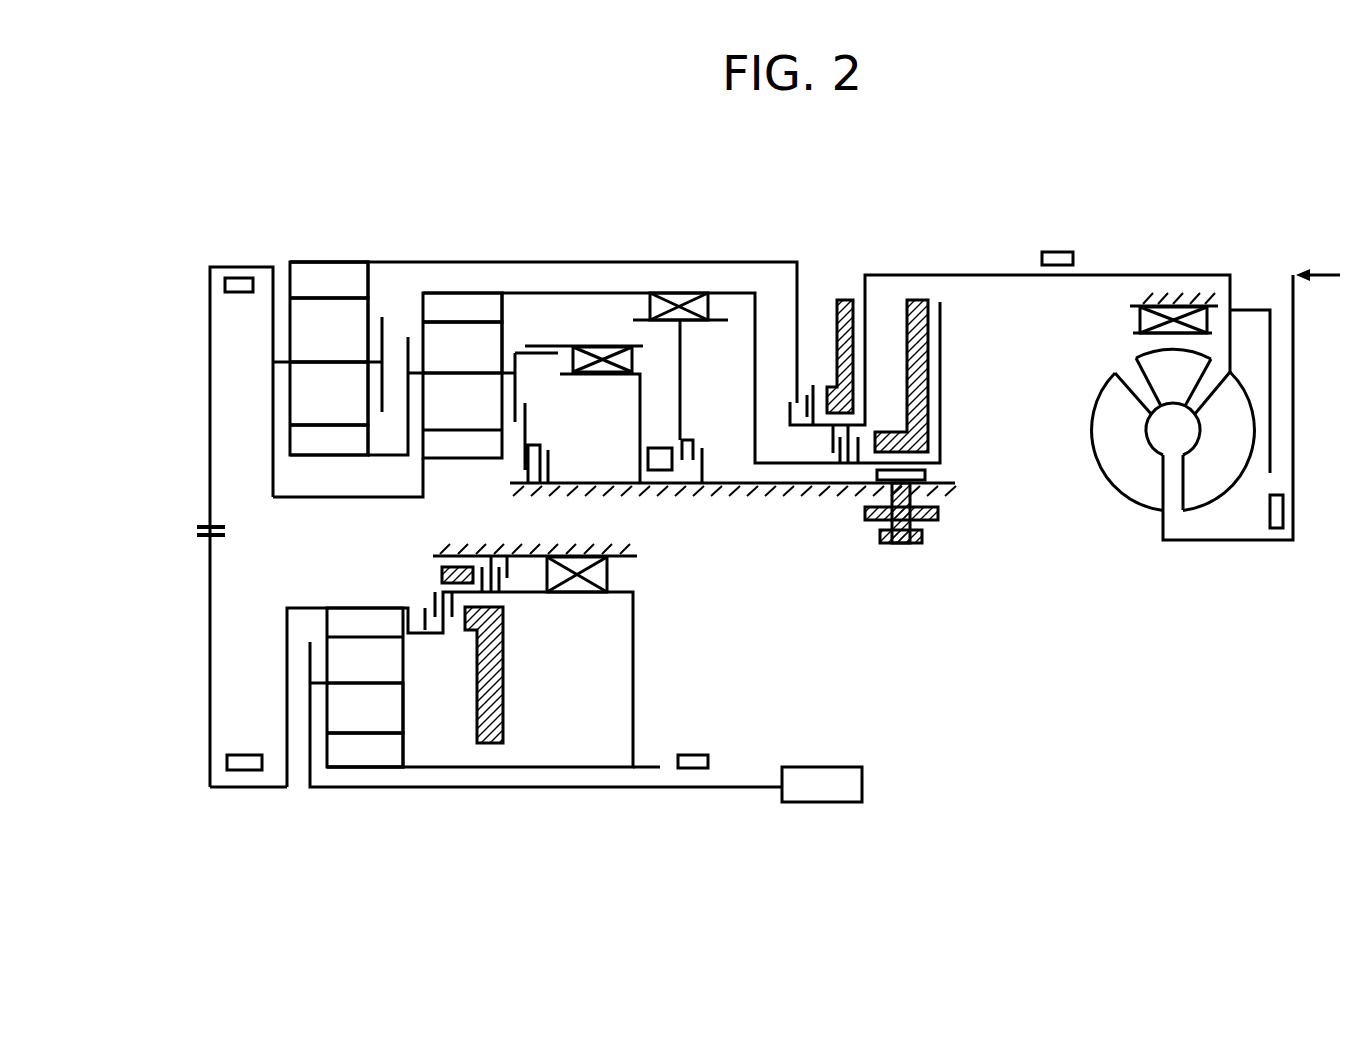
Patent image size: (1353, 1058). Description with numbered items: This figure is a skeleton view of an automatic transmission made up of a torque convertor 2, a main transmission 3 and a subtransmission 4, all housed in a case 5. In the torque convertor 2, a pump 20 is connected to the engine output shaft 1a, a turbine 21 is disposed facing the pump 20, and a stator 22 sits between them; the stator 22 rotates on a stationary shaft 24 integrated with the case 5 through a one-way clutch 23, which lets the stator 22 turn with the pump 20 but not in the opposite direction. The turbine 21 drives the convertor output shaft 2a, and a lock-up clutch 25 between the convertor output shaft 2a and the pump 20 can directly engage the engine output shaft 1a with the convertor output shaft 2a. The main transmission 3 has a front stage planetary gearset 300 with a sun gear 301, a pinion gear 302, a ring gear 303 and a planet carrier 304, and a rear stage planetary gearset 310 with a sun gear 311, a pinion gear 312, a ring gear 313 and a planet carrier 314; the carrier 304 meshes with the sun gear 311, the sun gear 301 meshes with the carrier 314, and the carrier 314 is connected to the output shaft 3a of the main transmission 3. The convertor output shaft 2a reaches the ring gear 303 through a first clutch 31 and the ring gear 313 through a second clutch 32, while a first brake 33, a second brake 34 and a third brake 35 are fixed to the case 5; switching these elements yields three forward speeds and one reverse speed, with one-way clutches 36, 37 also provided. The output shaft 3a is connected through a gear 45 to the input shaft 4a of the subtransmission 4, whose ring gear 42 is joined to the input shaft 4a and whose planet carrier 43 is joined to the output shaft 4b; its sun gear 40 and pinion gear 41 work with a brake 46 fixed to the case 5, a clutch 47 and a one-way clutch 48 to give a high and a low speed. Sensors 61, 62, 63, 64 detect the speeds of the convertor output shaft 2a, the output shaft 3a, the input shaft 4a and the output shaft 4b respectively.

The engine output shaft 1a is at (1333, 272).
The torque convertor 2 is at (1120, 527).
The convertor output shaft 2a is at (966, 274).
The main transmission 3 is at (432, 250).
The output shaft of the main transmission 3a is at (238, 266).
The subtransmission 4 is at (428, 803).
The input shaft of the subtransmission 4a is at (247, 788).
The output shaft of the subtransmission 4b is at (718, 788).
The case 5 is at (572, 483).
The pump 20 is at (1110, 455).
The turbine 21 is at (1203, 483).
The stator 22 is at (1155, 362).
The one-way clutch 23 is at (1137, 322).
The stationary shaft 24 is at (1140, 295).
The lock-up clutch 25 is at (1267, 527).
The first clutch 31 is at (833, 452).
The second clutch 32 is at (787, 398).
The first brake 33 is at (933, 518).
The second brake 34 is at (523, 470).
The third brake 35 is at (716, 462).
The one-way clutch 36 is at (681, 293).
The one-way clutch 37 is at (612, 346).
The sun gear 40 is at (388, 756).
The pinion gear 41 is at (388, 712).
The ring gear 42 is at (355, 617).
The planet carrier 43 is at (308, 752).
The gear 45 is at (210, 537).
The brake 46 is at (507, 575).
The clutch 47 is at (433, 635).
The one-way clutch 48 is at (600, 575).
The sensor 61 is at (1058, 252).
The sensor 62 is at (232, 296).
The sensor 63 is at (240, 755).
The sensor 64 is at (693, 755).
The front stage planetary gearset 300 is at (459, 283).
The sun gear 301 is at (482, 307).
The pinion gear 302 is at (490, 343).
The ring gear 303 is at (468, 443).
The planet carrier 304 is at (407, 420).
The rear stage planetary gearset 310 is at (348, 252).
The sun gear 311 is at (320, 277).
The pinion gear 312 is at (307, 400).
The ring gear 313 is at (302, 443).
The planet carrier 314 is at (272, 348).